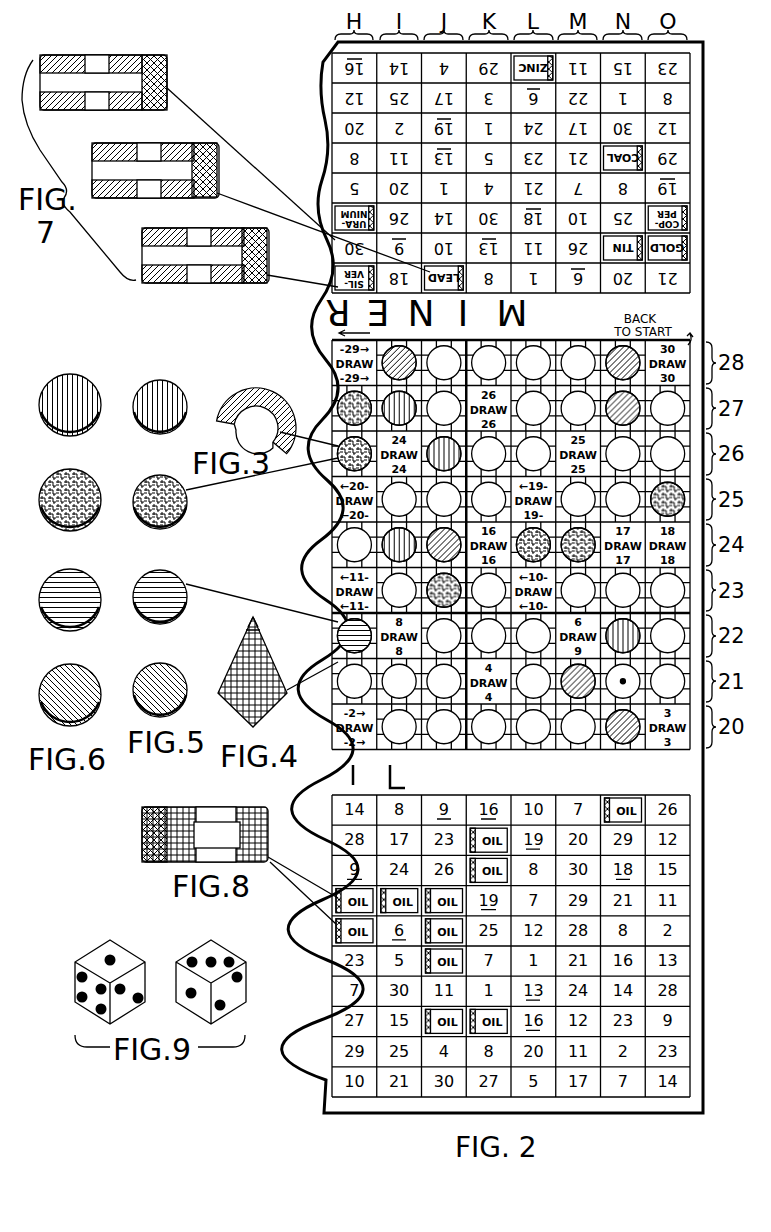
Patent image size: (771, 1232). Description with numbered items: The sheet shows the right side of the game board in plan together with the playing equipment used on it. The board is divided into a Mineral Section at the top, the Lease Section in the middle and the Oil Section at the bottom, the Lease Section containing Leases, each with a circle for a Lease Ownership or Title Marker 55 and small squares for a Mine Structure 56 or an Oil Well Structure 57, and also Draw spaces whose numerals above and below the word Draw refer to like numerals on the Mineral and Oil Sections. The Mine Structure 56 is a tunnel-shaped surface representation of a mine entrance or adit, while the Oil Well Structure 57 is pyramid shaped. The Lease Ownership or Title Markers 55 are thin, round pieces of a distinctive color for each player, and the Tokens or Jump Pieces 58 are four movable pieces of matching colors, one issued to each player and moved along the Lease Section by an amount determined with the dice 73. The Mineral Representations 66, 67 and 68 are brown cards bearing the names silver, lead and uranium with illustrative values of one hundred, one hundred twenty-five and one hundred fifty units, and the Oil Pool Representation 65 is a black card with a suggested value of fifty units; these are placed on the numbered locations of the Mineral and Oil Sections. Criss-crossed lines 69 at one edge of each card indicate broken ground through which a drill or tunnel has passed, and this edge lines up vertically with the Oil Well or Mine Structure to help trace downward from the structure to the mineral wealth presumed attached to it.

In FIG. 5, the Lease Ownership or Title Markers 55 is at (136, 378).
In FIG. 3, the Mine Structure 56 is at (270, 392).
In FIG. 4, the Oil Well Structure 57 is at (272, 668).
In FIG. 6, the Tokens or Jump Pieces 58 is at (42, 372).
In FIG. 8, the Oil Pool Representation 65 is at (250, 800).
In FIG. 7, the Mineral Representation (Silver card) 66 is at (250, 223).
In FIG. 7, the Mineral Representation (Lead card) 67 is at (198, 138).
In FIG. 7, the Mineral Representation (Uranium card) 68 is at (145, 50).
In FIG. 7, the criss-crossed lines 69 is at (163, 73).
In FIG. 8, the criss-crossed lines 69 is at (142, 831).
In FIG. 9, the dice 73 is at (243, 945).